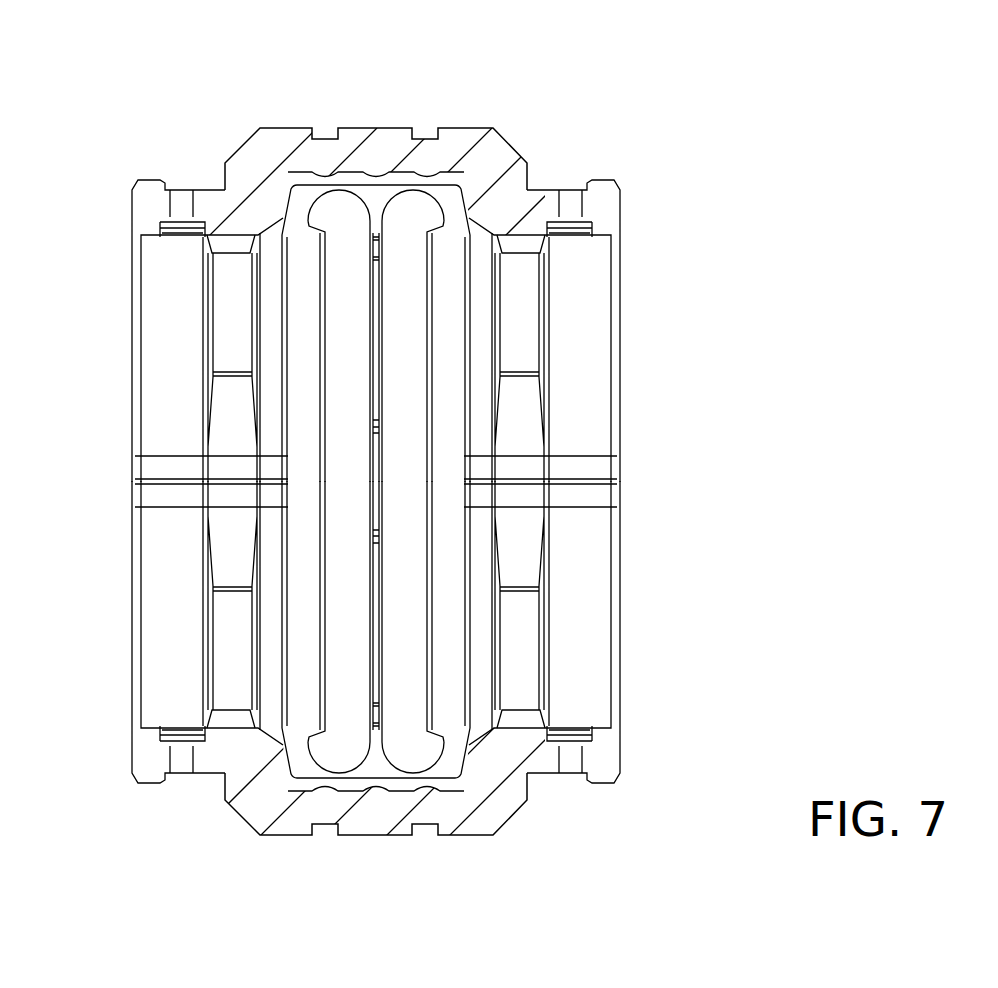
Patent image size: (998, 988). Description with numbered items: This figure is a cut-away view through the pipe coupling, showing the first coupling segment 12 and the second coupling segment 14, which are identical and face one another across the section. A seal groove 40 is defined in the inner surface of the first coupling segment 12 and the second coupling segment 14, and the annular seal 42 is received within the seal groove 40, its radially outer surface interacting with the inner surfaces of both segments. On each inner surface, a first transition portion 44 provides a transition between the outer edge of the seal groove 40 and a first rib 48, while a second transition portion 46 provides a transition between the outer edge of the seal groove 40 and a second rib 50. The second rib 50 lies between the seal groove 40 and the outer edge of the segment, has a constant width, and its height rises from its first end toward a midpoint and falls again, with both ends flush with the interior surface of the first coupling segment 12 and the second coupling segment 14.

The first coupling segment 12 is at (518, 190).
The second coupling segment 14 is at (492, 813).
The seal groove 40 is at (400, 169).
The seal 42 is at (330, 757).
The first transition portion 44 is at (284, 236).
The second transition portion 46 is at (467, 236).
The first rib 48 is at (266, 237).
The second rib 50 is at (484, 242).